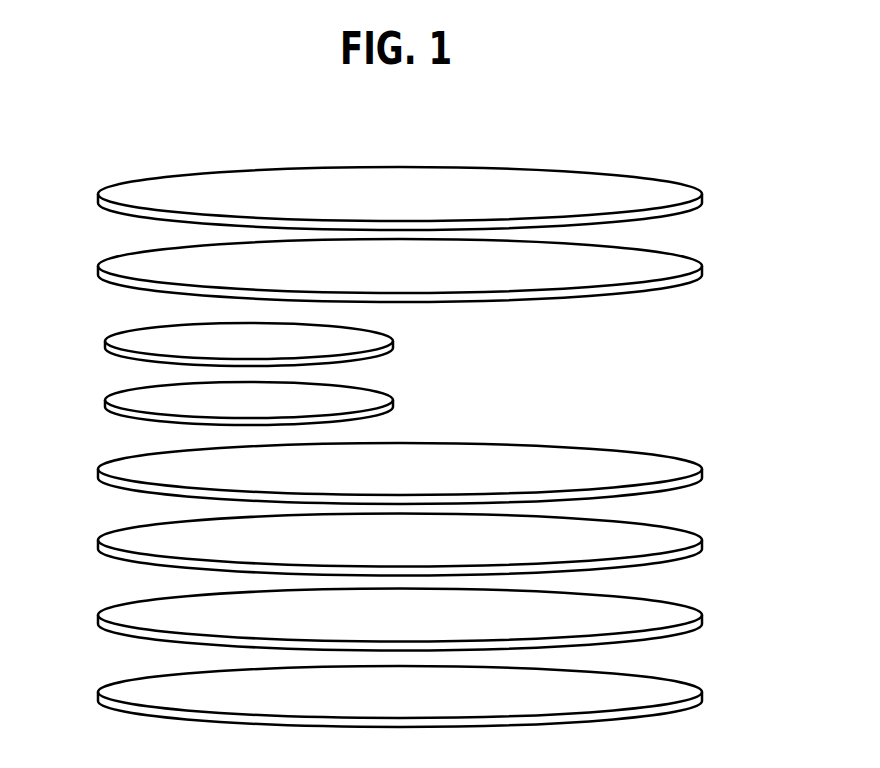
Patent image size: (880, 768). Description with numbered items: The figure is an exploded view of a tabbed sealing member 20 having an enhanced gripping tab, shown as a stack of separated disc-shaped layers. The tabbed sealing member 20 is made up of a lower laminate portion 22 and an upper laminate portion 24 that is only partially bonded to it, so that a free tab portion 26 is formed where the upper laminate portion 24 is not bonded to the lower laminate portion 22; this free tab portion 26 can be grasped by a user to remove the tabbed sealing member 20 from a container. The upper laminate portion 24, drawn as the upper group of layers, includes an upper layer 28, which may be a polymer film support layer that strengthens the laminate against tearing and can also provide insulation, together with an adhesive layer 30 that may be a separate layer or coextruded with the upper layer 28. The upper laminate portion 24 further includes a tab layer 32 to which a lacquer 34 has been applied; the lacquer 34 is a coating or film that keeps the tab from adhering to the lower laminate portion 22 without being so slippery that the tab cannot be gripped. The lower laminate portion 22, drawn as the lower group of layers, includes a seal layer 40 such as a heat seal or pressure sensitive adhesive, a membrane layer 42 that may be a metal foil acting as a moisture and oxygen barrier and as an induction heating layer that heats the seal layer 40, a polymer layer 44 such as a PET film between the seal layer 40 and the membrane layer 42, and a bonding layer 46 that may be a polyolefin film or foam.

The tabbed sealing member 20 is at (604, 124).
The lower laminate portion 22 is at (90, 717).
The upper laminate portion 24 is at (90, 415).
The free tab portion 26 is at (398, 148).
The upper layer 28 is at (681, 189).
The adhesive layer 30 is at (682, 267).
The tab layer 32 is at (380, 342).
The lacquer 34 is at (377, 400).
The seal layer 40 is at (682, 687).
The membrane layer 42 is at (682, 538).
The polymer layer 44 is at (682, 615).
The bonding layer 46 is at (682, 473).